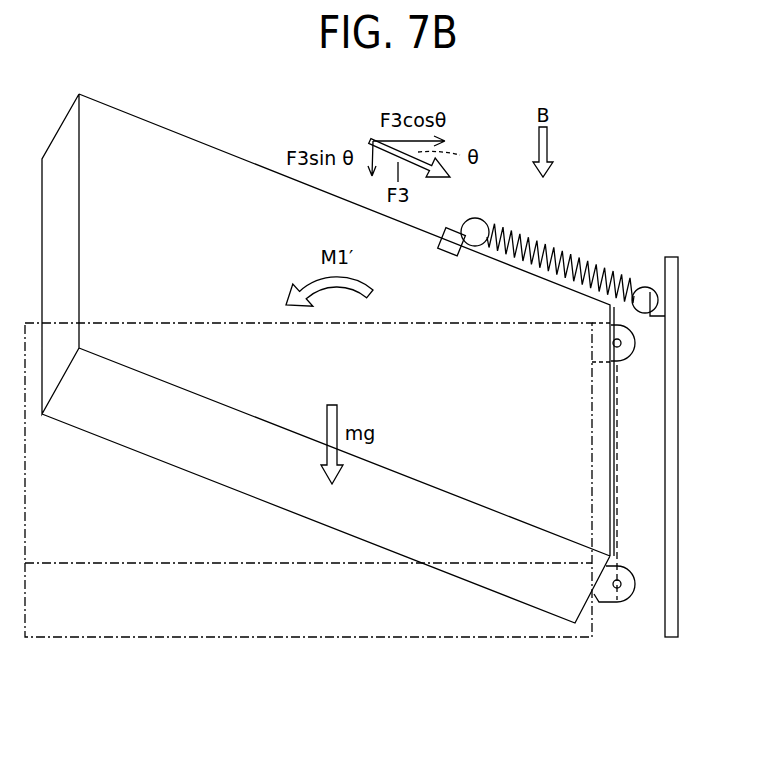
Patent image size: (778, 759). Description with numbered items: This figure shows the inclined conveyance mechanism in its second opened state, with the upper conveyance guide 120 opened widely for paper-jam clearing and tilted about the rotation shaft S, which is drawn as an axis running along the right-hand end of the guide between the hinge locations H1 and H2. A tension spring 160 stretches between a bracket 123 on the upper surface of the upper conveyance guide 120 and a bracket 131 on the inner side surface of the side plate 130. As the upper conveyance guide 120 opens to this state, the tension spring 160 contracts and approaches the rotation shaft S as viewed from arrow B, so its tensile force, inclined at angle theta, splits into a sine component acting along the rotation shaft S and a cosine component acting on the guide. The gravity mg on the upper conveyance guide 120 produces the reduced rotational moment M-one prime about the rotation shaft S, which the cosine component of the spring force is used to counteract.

The upper conveyance guide 120 is at (328, 527).
The bracket 123 is at (452, 254).
The side plate 130 is at (678, 338).
The bracket 131 is at (645, 286).
The tension spring 160 is at (562, 244).
The first hinge H1 is at (633, 354).
The second hinge H2 is at (624, 596).
The rotation shaft S is at (617, 477).